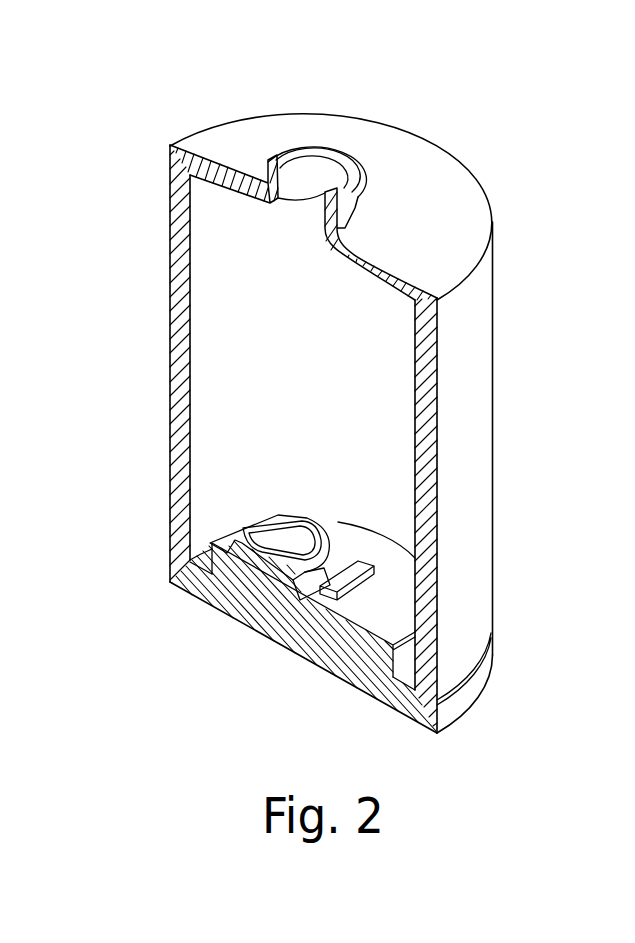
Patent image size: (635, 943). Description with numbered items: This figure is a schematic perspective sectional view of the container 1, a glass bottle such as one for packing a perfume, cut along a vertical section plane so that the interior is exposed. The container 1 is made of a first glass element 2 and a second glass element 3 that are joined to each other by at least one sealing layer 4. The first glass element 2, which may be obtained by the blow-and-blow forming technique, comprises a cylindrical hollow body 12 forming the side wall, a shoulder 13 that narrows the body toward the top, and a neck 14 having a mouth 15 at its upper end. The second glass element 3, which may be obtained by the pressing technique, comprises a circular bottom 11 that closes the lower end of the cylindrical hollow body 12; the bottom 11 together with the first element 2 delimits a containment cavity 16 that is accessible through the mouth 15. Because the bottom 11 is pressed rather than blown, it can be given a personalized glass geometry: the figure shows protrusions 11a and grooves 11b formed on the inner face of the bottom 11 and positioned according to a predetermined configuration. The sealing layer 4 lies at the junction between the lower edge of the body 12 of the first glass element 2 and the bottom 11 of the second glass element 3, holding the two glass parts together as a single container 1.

The container 1 is at (350, 427).
The first glass element 2 is at (344, 427).
The second glass element 3 is at (467, 730).
The sealing layer 4 is at (405, 706).
The circular bottom 11 is at (246, 582).
The protrusions 11a is at (266, 527).
The grooves 11b is at (280, 558).
The cylindrical hollow body 12 is at (482, 463).
The shoulder 13 is at (452, 178).
The neck 14 is at (239, 179).
The mouth 15 is at (300, 174).
The containment cavity 16 is at (252, 361).